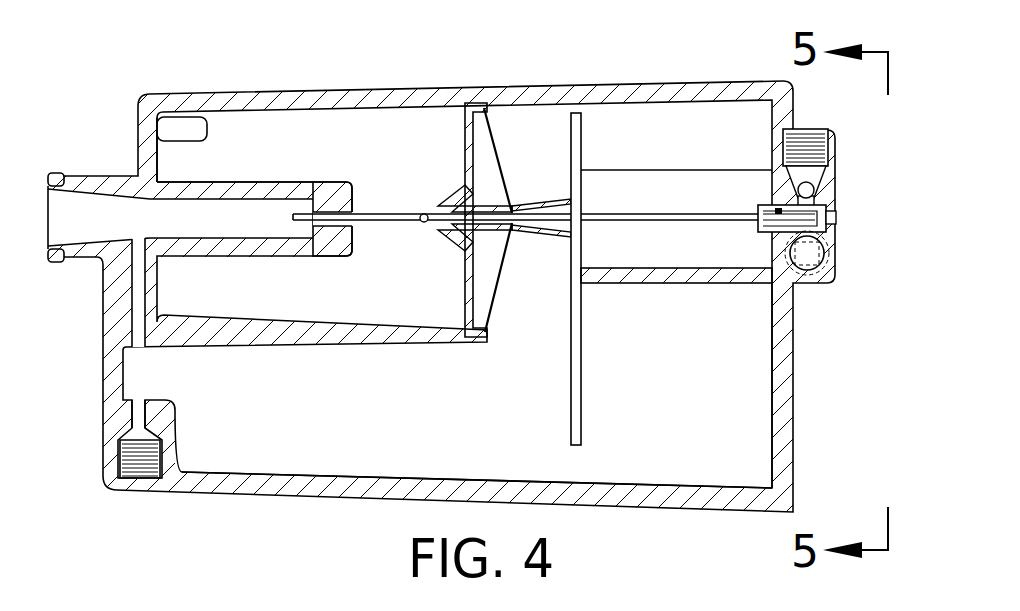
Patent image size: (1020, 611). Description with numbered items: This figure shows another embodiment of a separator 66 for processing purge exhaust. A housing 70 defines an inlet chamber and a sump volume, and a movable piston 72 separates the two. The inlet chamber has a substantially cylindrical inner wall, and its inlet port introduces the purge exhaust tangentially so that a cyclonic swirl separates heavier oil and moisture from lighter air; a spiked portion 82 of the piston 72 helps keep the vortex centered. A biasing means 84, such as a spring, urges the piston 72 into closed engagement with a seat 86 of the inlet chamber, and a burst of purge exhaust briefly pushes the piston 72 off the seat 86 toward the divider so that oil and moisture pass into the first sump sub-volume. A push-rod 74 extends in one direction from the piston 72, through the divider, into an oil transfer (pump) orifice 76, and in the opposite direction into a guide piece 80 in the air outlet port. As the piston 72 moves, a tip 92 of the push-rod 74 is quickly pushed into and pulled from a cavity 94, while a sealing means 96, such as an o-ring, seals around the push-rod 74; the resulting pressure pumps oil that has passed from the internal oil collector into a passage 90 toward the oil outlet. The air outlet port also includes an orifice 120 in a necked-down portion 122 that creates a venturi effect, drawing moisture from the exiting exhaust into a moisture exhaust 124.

The separator 66 is at (352, 66).
The housing 70 is at (628, 82).
The necked-down portion 122 is at (156, 183).
The guide piece 80 is at (332, 193).
The orifice 120 is at (138, 240).
The moisture exhaust 124 is at (139, 301).
The movable piston 72 is at (465, 125).
The seat 86 is at (464, 104).
The spiked portion 82 is at (453, 196).
The biasing means 84 is at (557, 205).
The push-rod 74 is at (373, 226).
The sealing means 96 is at (777, 205).
The tip 92 is at (775, 211).
The passage 90 is at (778, 253).
The oil transfer (pump) orifice 76 is at (817, 204).
The cavity 94 is at (826, 214).